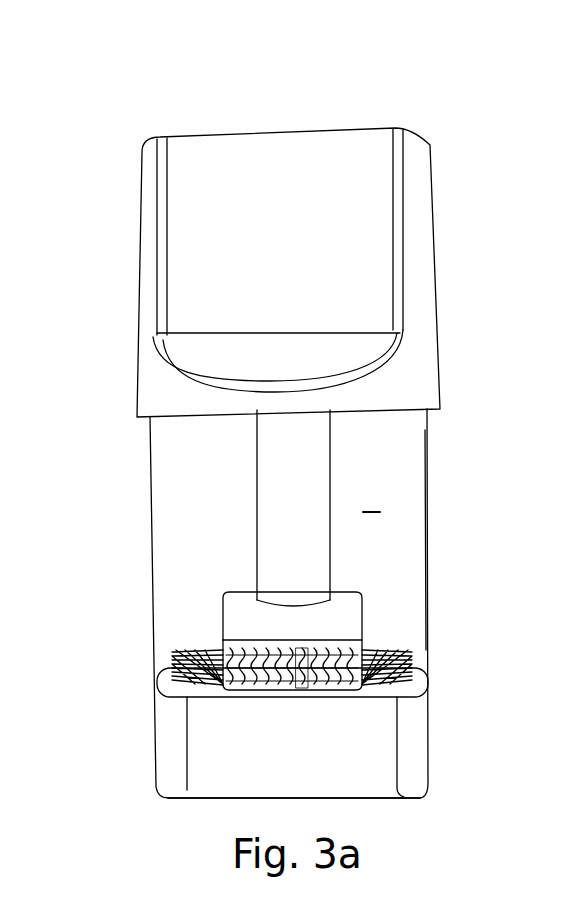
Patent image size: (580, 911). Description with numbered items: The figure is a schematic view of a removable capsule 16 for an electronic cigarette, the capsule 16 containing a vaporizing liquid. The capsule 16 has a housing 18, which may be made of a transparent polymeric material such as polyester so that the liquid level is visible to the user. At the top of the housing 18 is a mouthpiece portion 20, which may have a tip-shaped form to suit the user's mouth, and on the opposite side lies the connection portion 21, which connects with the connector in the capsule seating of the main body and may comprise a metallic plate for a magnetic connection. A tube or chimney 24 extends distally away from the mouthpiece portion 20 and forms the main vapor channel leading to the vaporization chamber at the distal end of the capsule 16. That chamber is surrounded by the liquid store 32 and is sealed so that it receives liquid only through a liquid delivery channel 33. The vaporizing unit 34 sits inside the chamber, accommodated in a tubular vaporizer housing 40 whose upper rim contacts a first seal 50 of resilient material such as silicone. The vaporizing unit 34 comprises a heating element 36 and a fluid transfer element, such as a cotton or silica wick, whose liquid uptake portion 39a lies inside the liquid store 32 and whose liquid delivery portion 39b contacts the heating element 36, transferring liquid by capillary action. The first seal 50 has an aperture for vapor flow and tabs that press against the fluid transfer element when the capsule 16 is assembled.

The capsule 16 is at (188, 100).
The housing 18 is at (427, 478).
The mouthpiece portion 20 is at (280, 188).
The connection portion 21 is at (368, 800).
The tube or chimney 24 is at (283, 507).
The liquid store 32 is at (392, 548).
The liquid delivery channel 33 is at (403, 645).
The vaporizing unit 34 is at (240, 683).
The heating element 36 is at (273, 678).
The liquid uptake portion 39a is at (172, 657).
The liquid delivery portion 39b is at (302, 673).
The vaporizer housing 40 is at (233, 645).
The first seal 50 is at (235, 620).